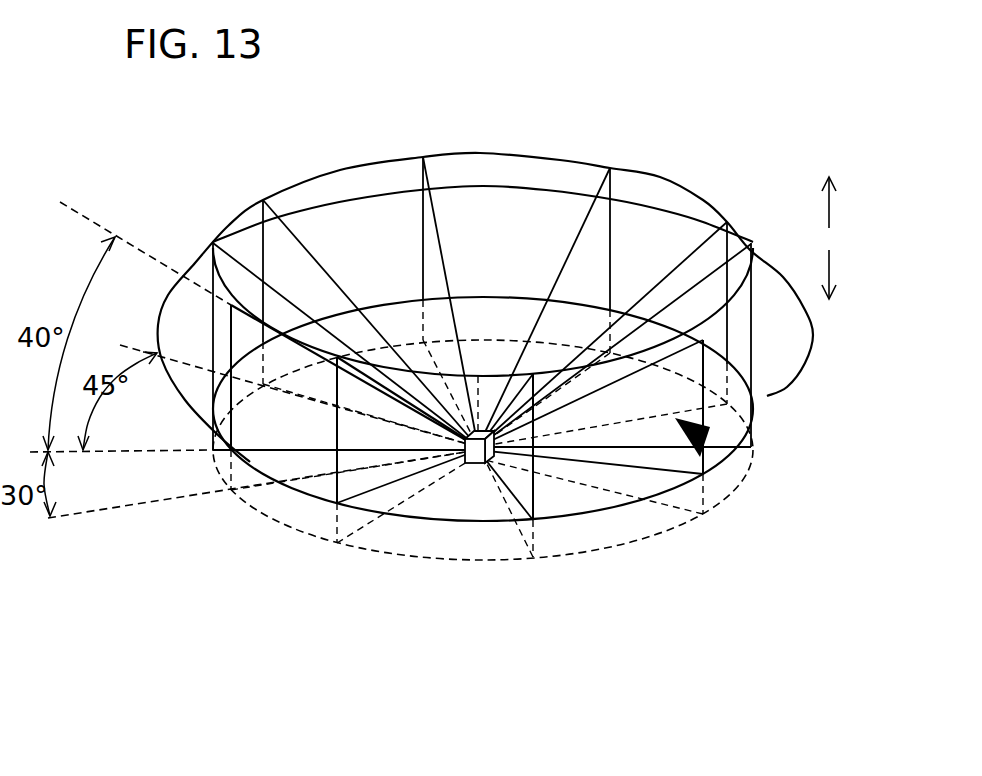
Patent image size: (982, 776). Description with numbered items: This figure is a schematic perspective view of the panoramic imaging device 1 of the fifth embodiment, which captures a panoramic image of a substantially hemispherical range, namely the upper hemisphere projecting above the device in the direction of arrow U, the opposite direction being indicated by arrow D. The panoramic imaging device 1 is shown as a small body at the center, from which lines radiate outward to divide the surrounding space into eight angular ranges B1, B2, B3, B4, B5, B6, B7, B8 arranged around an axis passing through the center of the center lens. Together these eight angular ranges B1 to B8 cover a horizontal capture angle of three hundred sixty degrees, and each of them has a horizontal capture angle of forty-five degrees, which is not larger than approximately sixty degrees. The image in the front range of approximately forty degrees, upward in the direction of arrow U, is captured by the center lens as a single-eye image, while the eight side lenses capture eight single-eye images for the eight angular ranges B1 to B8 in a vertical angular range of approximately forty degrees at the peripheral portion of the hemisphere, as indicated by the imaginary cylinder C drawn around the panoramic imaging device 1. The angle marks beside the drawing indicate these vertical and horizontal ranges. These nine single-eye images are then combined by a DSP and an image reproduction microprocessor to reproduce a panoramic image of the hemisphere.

The panoramic imaging device 1 is at (473, 455).
The angular range B1 is at (653, 193).
The angular range B2 is at (513, 165).
The angular range B3 is at (357, 182).
The angular range B4 is at (233, 257).
The angular range B5 is at (283, 422).
The angular range B6 is at (403, 507).
The angular range B7 is at (600, 493).
The angular range B8 is at (743, 342).
The imaginary cylinder C is at (395, 150).
The arrow U is at (834, 208).
The arrow D is at (834, 262).